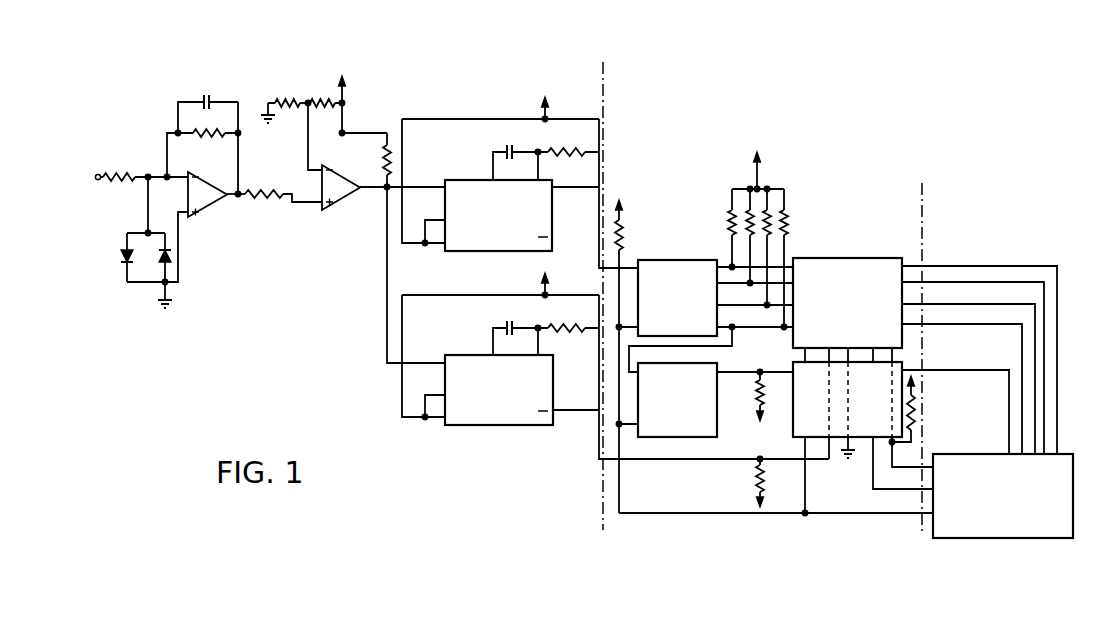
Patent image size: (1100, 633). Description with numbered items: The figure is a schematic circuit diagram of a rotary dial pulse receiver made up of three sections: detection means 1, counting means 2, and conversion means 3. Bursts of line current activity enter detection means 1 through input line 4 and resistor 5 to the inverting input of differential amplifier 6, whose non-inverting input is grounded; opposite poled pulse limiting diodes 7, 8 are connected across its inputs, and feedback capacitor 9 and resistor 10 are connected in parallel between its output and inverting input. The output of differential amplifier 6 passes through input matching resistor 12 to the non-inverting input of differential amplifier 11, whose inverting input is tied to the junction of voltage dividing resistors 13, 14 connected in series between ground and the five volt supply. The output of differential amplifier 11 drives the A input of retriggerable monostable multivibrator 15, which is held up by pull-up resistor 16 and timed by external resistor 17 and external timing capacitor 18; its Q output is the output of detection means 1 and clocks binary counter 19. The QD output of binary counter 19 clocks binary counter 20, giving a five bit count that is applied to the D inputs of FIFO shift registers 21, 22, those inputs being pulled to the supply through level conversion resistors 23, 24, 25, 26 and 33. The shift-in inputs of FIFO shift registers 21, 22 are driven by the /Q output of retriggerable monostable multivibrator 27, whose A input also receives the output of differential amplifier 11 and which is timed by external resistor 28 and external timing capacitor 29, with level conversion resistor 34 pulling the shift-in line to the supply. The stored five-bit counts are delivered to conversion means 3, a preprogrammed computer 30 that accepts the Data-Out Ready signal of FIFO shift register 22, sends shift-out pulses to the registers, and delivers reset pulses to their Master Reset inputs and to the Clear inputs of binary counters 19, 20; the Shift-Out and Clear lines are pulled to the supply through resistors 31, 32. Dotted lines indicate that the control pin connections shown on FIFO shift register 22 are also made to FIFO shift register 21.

The detection means 1 is at (312, 283).
The counting means 2 is at (652, 528).
The conversion means 3 is at (972, 556).
The input line 4 is at (100, 160).
The resistor 5 is at (120, 160).
The differential amplifier 6 is at (211, 206).
The pulse limiting diode 7 is at (124, 261).
The pulse limiting diode 8 is at (169, 252).
The feedback capacitor 9 is at (208, 98).
The feedback resistor 10 is at (210, 140).
The differential amplifier 11 is at (344, 172).
The input matching resistor 12 is at (263, 201).
The voltage dividing resistor 13 is at (287, 100).
The voltage dividing resistor 14 is at (325, 100).
The retriggerable monostable multivibrator 15 is at (468, 180).
The pull-up resistor 16 is at (393, 165).
The external resistor 17 is at (573, 157).
The external timing capacitor 18 is at (504, 149).
The binary counter 19 is at (674, 260).
The binary counter 20 is at (677, 400).
The FIFO shift register 21 is at (852, 258).
The FIFO shift register 22 is at (793, 361).
The level conversion resistor 23 is at (730, 220).
The level conversion resistor 24 is at (748, 220).
The level conversion resistor 25 is at (770, 220).
The level conversion resistor 26 is at (788, 220).
The retriggerable monostable multivibrator 27 is at (466, 355).
The external resistor 28 is at (578, 335).
The external timing capacitor 29 is at (505, 325).
The computer 30 is at (934, 538).
The resistor 31 is at (916, 412).
The resistor 32 is at (623, 228).
The level conversion resistor 33 is at (757, 386).
The level conversion resistor 34 is at (757, 471).